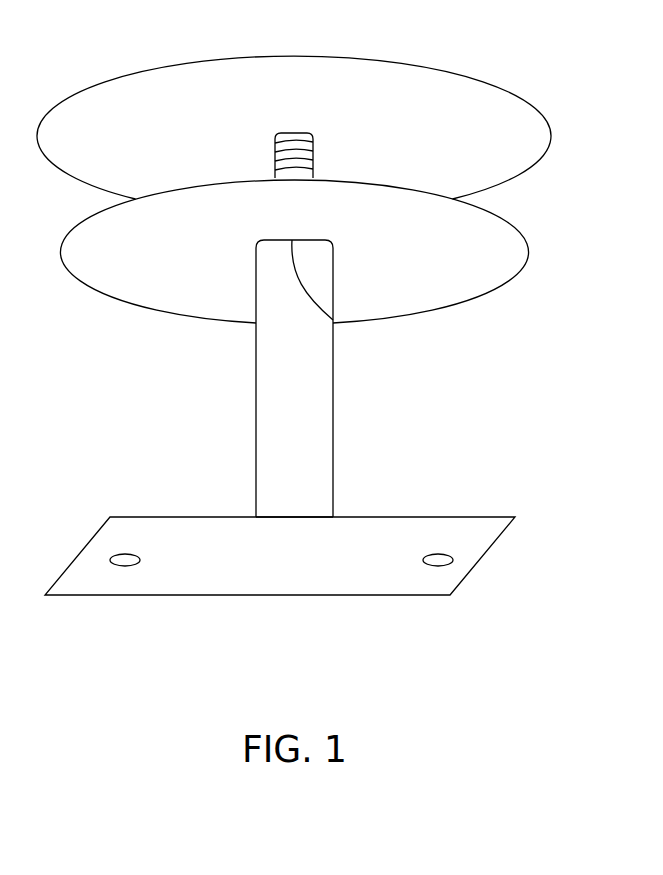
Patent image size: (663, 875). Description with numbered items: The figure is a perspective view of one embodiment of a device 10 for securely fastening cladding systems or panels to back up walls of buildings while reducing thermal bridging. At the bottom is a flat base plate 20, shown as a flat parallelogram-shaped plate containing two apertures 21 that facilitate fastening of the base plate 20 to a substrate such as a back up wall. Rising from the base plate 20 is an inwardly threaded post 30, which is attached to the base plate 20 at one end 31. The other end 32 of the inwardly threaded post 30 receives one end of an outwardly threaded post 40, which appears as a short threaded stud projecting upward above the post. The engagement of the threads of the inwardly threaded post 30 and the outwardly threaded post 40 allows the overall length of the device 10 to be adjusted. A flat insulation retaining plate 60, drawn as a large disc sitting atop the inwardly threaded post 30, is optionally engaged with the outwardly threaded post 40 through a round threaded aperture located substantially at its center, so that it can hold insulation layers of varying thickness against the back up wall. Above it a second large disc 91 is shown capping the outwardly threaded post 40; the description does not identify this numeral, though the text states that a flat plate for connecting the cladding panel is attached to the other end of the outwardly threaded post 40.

The device 10 is at (268, 384).
The flat base plate 20 is at (480, 560).
The apertures 21 is at (122, 567).
The inwardly threaded post 30 is at (333, 388).
The one end of the inwardly threaded post 31 is at (333, 517).
The other end of the inwardly threaded post 32 is at (333, 320).
The outwardly threaded post 40 is at (313, 153).
The flat insulation retaining plate 60 is at (527, 243).
The upper display disc 91 is at (551, 133).